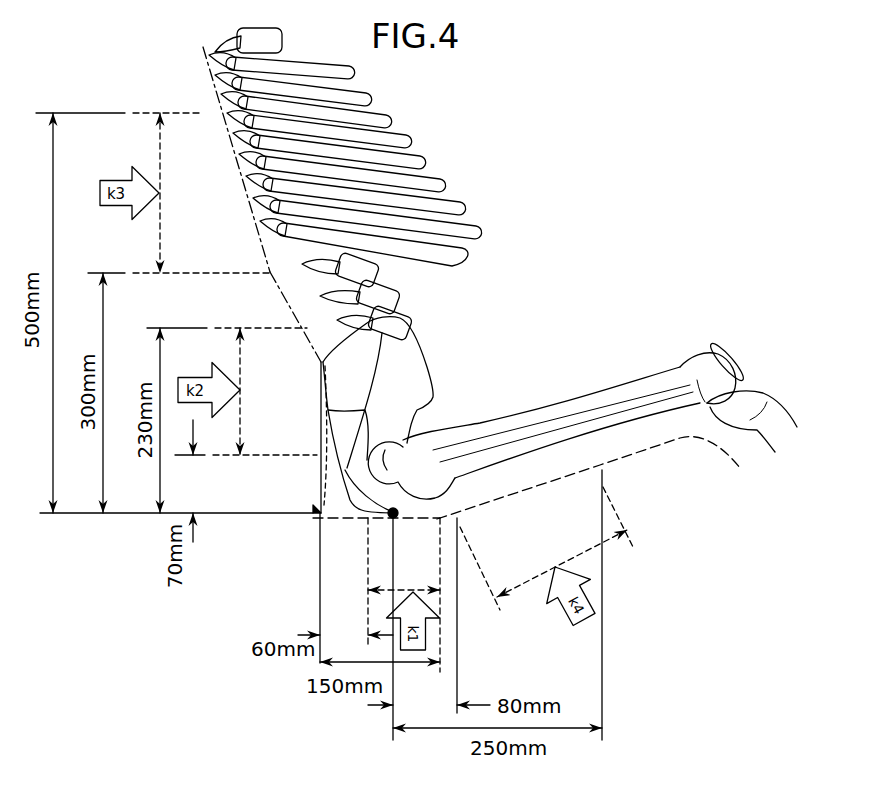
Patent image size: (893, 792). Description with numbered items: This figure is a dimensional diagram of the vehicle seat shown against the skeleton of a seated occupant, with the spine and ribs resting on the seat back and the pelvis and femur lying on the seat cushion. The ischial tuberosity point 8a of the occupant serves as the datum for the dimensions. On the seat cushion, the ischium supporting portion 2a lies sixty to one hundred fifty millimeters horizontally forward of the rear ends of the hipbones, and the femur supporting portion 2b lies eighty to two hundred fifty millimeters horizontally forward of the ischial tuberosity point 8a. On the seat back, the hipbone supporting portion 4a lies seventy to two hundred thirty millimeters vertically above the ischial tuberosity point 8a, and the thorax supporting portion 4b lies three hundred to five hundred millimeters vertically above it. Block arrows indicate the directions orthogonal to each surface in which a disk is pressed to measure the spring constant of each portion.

The ischium supporting portion 2a is at (440, 528).
The femur supporting portion 2b is at (597, 483).
The hipbone supporting portion 4a is at (277, 337).
The thorax supporting portion 4b is at (257, 270).
The ischial tuberosity point 8a is at (398, 507).